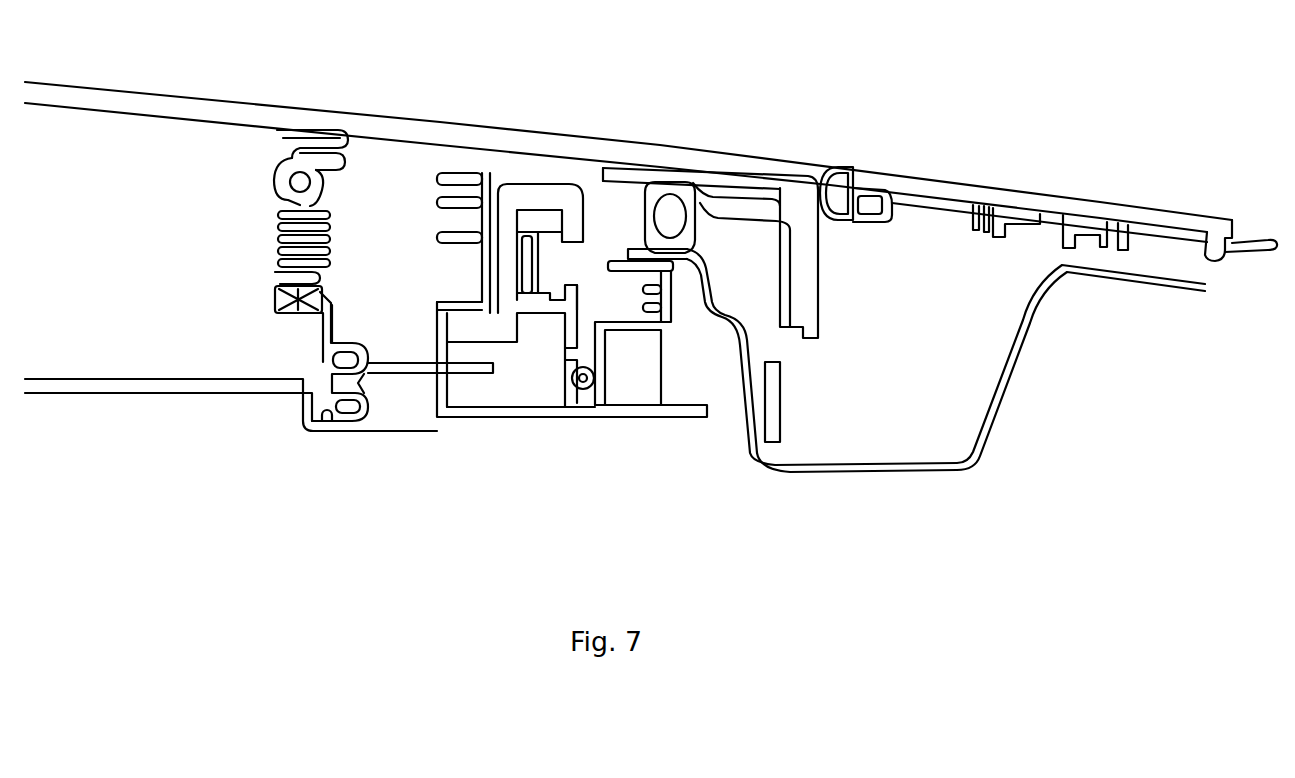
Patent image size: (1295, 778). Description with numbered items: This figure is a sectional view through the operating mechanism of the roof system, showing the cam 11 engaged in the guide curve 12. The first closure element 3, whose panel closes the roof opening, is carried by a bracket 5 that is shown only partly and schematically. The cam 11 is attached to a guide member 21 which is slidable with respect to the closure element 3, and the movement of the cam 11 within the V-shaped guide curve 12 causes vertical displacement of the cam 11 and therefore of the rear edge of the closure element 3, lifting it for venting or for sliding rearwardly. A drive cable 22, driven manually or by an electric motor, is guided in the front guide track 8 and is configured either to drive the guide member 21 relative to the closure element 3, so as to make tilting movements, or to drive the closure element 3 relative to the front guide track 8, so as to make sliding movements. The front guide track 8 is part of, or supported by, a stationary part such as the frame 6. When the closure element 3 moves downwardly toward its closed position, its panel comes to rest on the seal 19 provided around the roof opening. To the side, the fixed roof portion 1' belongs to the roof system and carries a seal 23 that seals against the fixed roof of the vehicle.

The first closure element 3 is at (382, 120).
The guide member 21 is at (540, 200).
The seal 19 is at (662, 188).
The bracket 5 is at (768, 208).
The fixed roof portion 1' is at (1013, 157).
The seal 23 is at (1277, 250).
The guide curve 12 is at (458, 349).
The cam 11 is at (477, 328).
The front guide track 8 is at (560, 426).
The drive cable 22 is at (593, 392).
The frame 6 is at (850, 478).